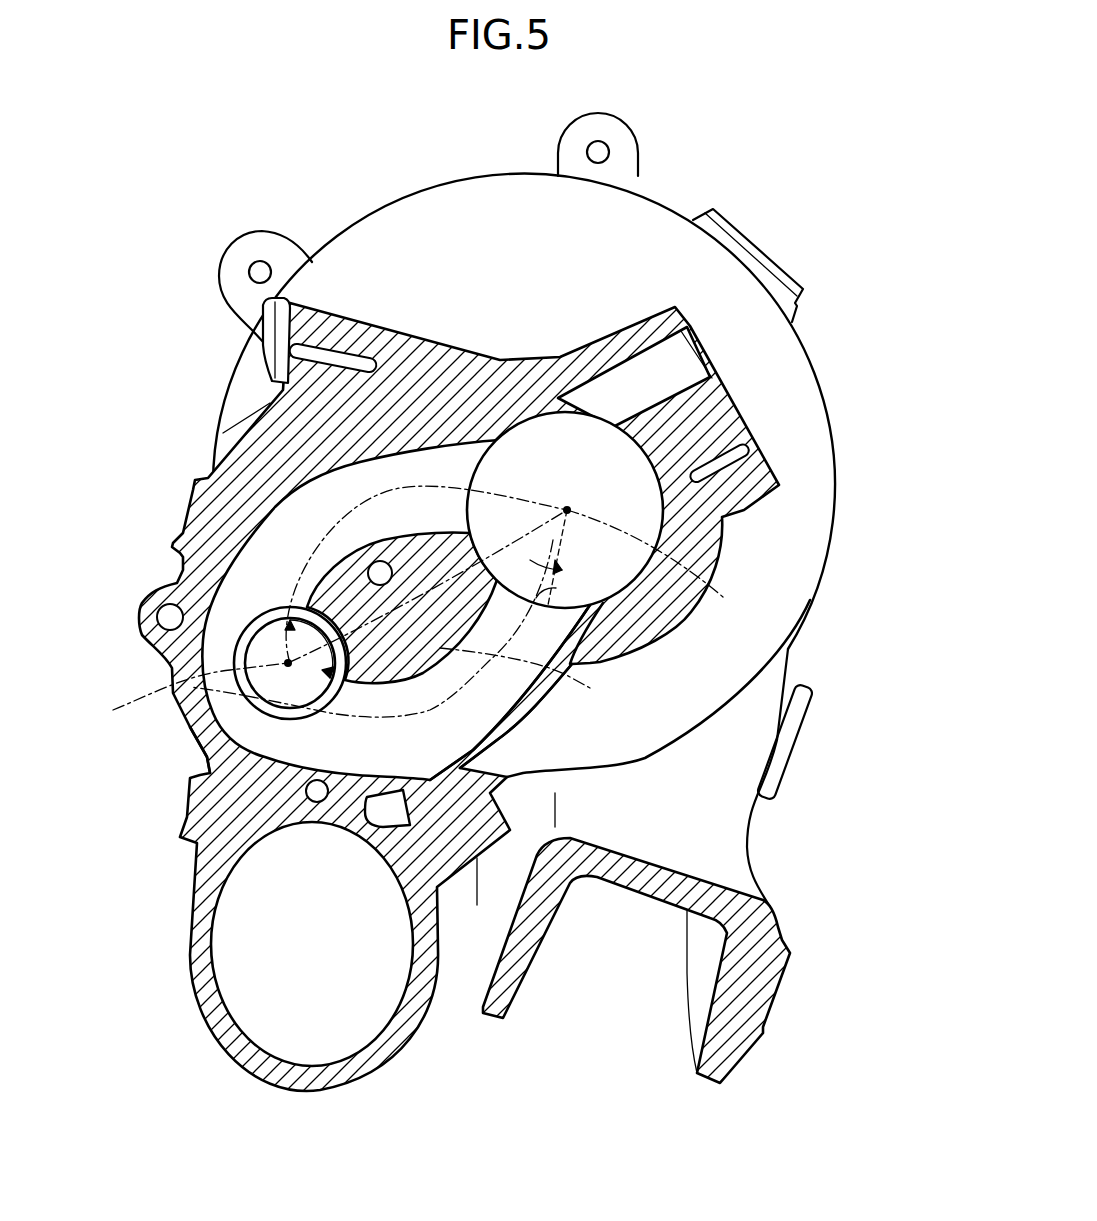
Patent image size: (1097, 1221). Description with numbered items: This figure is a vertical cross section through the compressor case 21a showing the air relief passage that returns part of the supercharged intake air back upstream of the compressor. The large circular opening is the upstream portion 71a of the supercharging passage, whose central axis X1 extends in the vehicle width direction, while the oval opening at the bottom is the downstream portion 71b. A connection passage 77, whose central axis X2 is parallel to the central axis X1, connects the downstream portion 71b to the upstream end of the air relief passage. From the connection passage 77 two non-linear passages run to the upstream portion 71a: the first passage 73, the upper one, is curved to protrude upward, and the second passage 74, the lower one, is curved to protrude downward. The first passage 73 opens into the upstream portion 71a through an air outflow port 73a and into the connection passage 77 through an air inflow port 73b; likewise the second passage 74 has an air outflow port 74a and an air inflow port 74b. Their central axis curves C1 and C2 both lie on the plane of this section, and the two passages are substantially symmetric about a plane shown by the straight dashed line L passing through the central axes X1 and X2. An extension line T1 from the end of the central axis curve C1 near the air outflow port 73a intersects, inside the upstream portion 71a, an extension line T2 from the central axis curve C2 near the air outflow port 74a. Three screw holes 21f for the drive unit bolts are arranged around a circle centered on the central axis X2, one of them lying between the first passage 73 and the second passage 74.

The compressor case 21a is at (656, 222).
The screw holes 21f is at (370, 571).
The upstream portion 71a is at (720, 517).
The downstream portion 71b is at (248, 968).
The first passage 73 is at (287, 513).
The air outflow port 73a is at (485, 462).
The air inflow port 73b is at (268, 655).
The second passage 74 is at (467, 718).
The air outflow port 74a is at (590, 595).
The air inflow port 74b is at (207, 763).
The connection passage 77 is at (270, 678).
The central axis curve C1 is at (405, 492).
The central axis curve C2 is at (520, 703).
The straight dashed line L is at (526, 677).
The central axis X1 is at (668, 563).
The central axis X2 is at (317, 618).
The extension line T1 is at (512, 493).
The extension line T2 is at (550, 562).